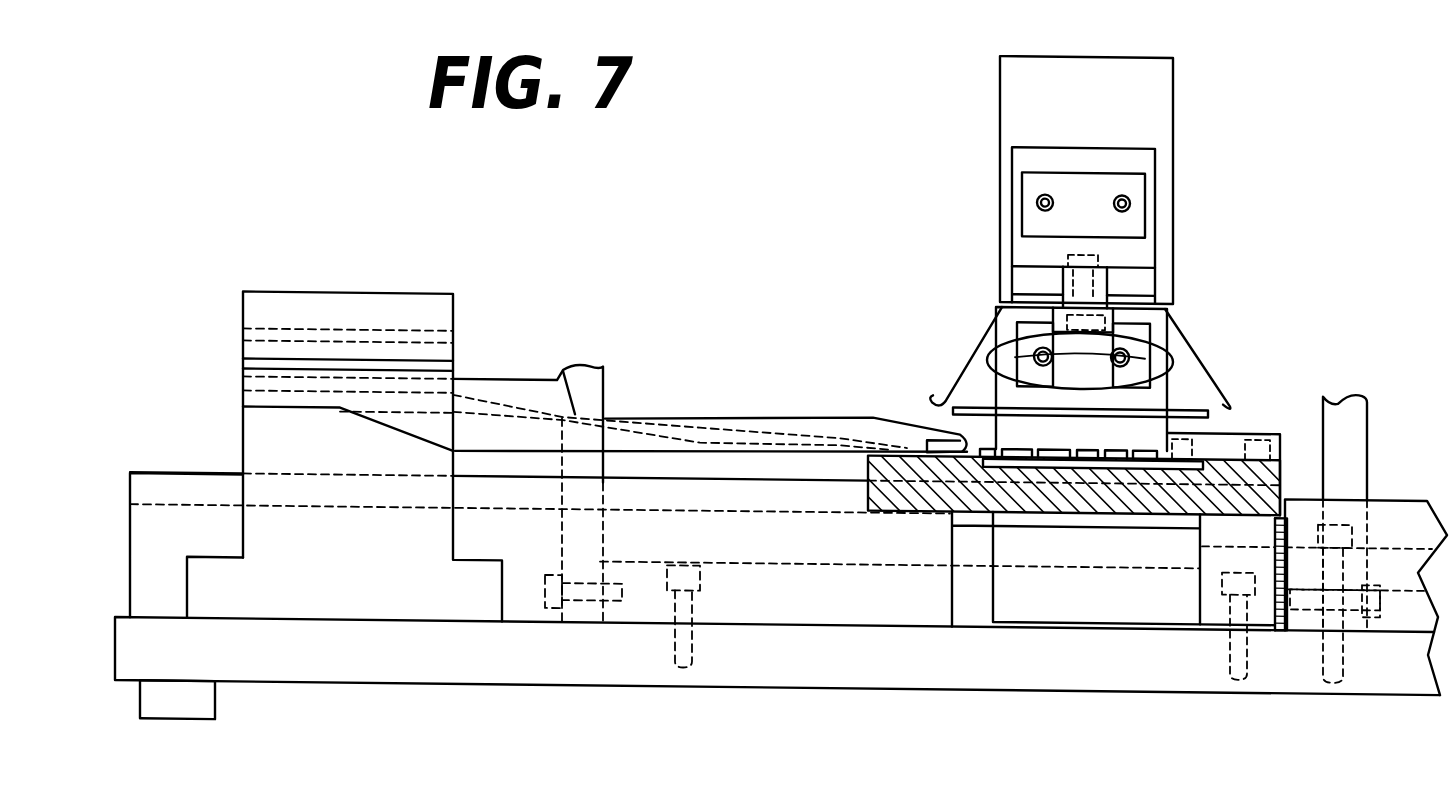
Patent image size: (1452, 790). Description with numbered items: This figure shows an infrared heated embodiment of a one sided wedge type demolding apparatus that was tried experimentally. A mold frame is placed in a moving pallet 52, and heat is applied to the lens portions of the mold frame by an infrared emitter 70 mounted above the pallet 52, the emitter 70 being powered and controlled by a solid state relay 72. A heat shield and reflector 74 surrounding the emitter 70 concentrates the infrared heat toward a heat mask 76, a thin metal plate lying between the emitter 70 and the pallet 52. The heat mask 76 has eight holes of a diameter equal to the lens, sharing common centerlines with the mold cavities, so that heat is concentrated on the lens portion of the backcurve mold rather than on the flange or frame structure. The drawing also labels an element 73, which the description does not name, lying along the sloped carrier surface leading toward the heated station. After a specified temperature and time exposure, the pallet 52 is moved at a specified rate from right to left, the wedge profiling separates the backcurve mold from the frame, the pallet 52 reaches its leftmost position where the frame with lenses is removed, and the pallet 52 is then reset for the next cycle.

The moving pallet 52 is at (1042, 482).
The infrared emitter 70 is at (1102, 336).
The solid state relay 72 is at (1118, 219).
The workpiece sheet 73 is at (788, 432).
The heat shield and reflector 74 is at (987, 322).
The heat mask 76 is at (978, 398).